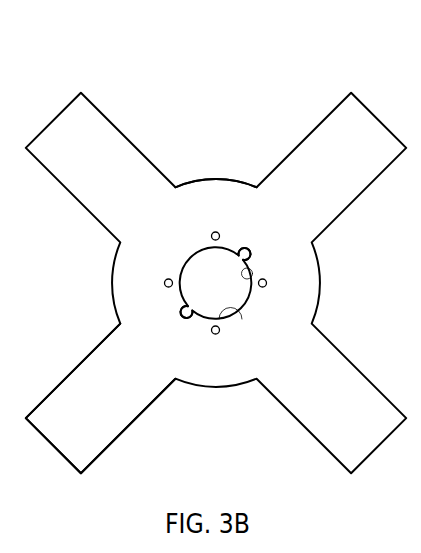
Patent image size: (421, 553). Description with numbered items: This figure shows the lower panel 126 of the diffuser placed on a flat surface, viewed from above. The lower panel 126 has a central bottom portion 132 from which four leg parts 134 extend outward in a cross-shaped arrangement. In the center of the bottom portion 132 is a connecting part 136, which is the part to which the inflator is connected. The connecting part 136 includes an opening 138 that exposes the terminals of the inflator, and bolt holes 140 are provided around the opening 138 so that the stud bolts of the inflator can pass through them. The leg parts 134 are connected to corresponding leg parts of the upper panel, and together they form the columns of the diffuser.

The lower panel 126 is at (120, 72).
The central bottom portion 132 is at (200, 195).
The leg parts 134 is at (90, 353).
The connecting part 136 is at (241, 315).
The opening 138 is at (247, 267).
The bolt holes 140 is at (268, 284).